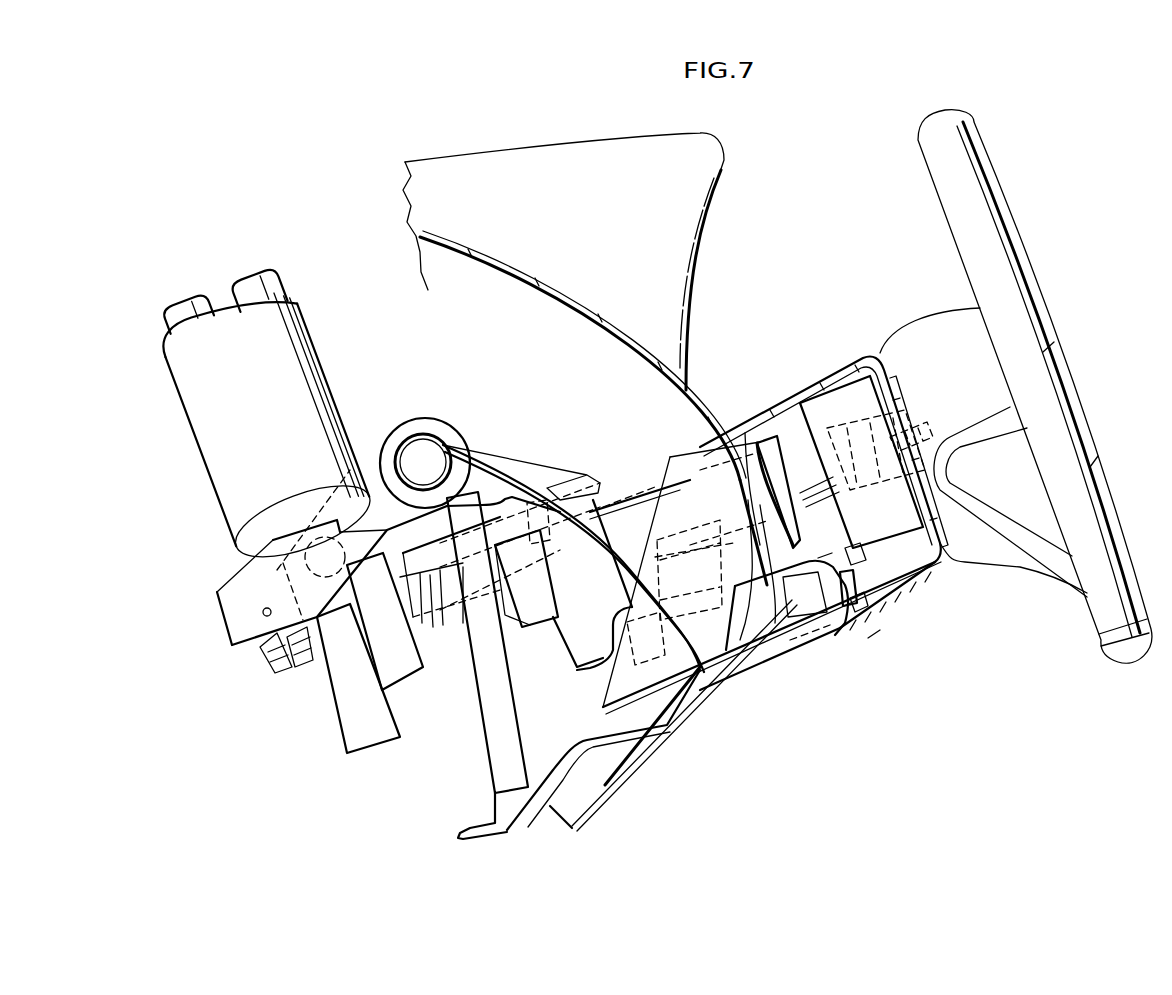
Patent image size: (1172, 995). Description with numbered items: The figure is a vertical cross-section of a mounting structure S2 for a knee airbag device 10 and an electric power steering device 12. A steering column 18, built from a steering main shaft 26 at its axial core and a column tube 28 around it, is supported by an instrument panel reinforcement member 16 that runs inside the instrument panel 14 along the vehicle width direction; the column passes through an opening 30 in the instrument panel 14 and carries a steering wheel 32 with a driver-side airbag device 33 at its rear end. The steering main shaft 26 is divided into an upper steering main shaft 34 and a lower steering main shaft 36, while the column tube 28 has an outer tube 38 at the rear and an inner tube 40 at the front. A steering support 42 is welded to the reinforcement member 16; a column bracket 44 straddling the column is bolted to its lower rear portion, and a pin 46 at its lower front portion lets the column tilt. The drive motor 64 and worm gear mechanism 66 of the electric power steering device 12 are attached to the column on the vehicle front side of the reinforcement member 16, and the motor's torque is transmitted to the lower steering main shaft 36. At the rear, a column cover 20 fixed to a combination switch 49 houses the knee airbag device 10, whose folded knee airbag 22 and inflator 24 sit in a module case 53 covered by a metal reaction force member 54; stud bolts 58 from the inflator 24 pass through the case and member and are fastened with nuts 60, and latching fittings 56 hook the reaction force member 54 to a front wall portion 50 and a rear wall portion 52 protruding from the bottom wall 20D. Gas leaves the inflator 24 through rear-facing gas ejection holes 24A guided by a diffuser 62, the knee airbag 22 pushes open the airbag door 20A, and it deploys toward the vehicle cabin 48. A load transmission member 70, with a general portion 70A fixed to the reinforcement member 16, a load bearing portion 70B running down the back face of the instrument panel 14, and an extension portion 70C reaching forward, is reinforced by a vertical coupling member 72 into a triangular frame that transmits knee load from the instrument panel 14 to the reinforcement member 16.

The knee airbag device 10 is at (866, 634).
The electric power steering device 12 is at (217, 268).
The instrument panel 14 is at (634, 782).
The instrument panel reinforcement member 16 is at (420, 428).
The steering column 18 is at (778, 420).
The column cover 20 is at (808, 373).
The airbag door 20A is at (766, 655).
The bottom wall 20D is at (914, 583).
The knee airbag 22 is at (838, 638).
The inflator 24 is at (719, 695).
The gas ejection holes 24A is at (801, 650).
The steering main shaft 26 is at (641, 518).
The column tube 28 is at (586, 469).
The opening 30 is at (720, 452).
The steering wheel 32 is at (998, 190).
The driver-side airbag device 33 is at (1035, 247).
The upper steering main shaft 34 is at (918, 422).
The lower steering main shaft 36 is at (275, 675).
The outer tube 38 is at (627, 483).
The inner tube 40 is at (457, 638).
The steering support 42 is at (495, 465).
The column bracket 44 is at (558, 625).
The pin 46 is at (264, 613).
The vehicle cabin 48 is at (871, 766).
The combination switch 49 is at (853, 385).
The front wall portion 50 is at (558, 620).
The rear wall portion 52 is at (851, 557).
The module case 53 is at (628, 706).
The reaction force member 54 is at (819, 563).
The latching fittings 56 is at (857, 598).
The stud bolts 58 is at (727, 574).
The nuts 60 is at (737, 570).
The diffuser 62 is at (814, 630).
The drive motor 64 is at (312, 347).
The worm gear mechanism 66 is at (372, 752).
The load transmission member 70 is at (534, 495).
The general portion 70A is at (589, 537).
The load bearing portion 70B is at (676, 714).
The extension portion 70C is at (588, 750).
The coupling member 72 is at (485, 735).
The mounting structure S2 is at (779, 184).